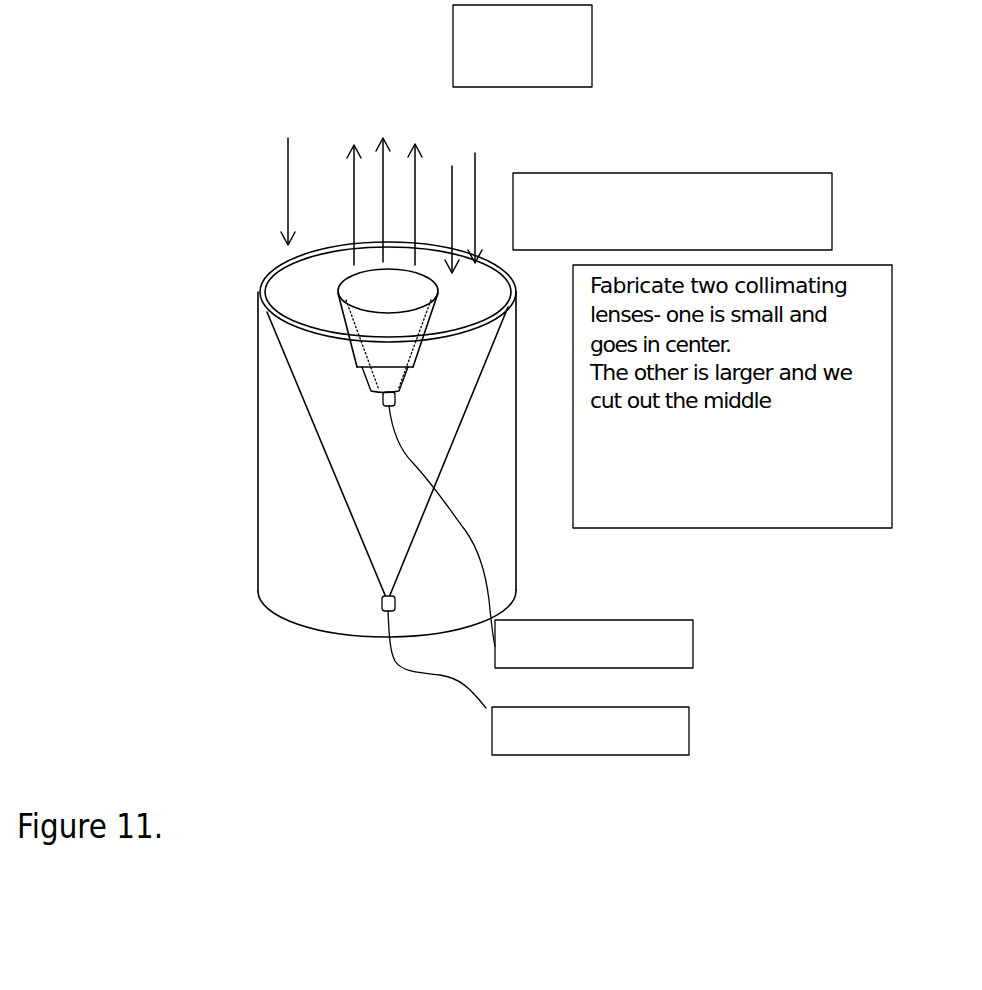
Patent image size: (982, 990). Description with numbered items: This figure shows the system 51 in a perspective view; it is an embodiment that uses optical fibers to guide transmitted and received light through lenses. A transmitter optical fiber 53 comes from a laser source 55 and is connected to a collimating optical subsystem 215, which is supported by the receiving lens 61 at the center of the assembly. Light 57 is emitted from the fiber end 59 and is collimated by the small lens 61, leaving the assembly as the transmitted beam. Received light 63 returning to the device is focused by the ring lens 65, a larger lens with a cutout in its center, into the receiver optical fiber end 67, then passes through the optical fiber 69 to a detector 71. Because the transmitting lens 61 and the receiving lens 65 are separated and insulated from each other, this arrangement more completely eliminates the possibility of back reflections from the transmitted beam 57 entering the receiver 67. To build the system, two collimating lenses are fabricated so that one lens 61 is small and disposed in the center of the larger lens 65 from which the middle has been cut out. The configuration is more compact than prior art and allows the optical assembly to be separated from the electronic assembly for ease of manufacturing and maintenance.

The embodiment 51 is at (310, 787).
The transmitter optical fiber 53 is at (480, 582).
The laser source 55 is at (698, 647).
The light 57 is at (416, 174).
The fiber end 59 is at (382, 398).
The lens 61 is at (334, 288).
The received light 63 is at (284, 168).
The ring lens 65 is at (259, 291).
The receiver optical fiber end 67 is at (380, 607).
The optical fiber 69 is at (430, 673).
The detector 71 is at (691, 738).
The collimating optical subsystem 215 is at (358, 366).